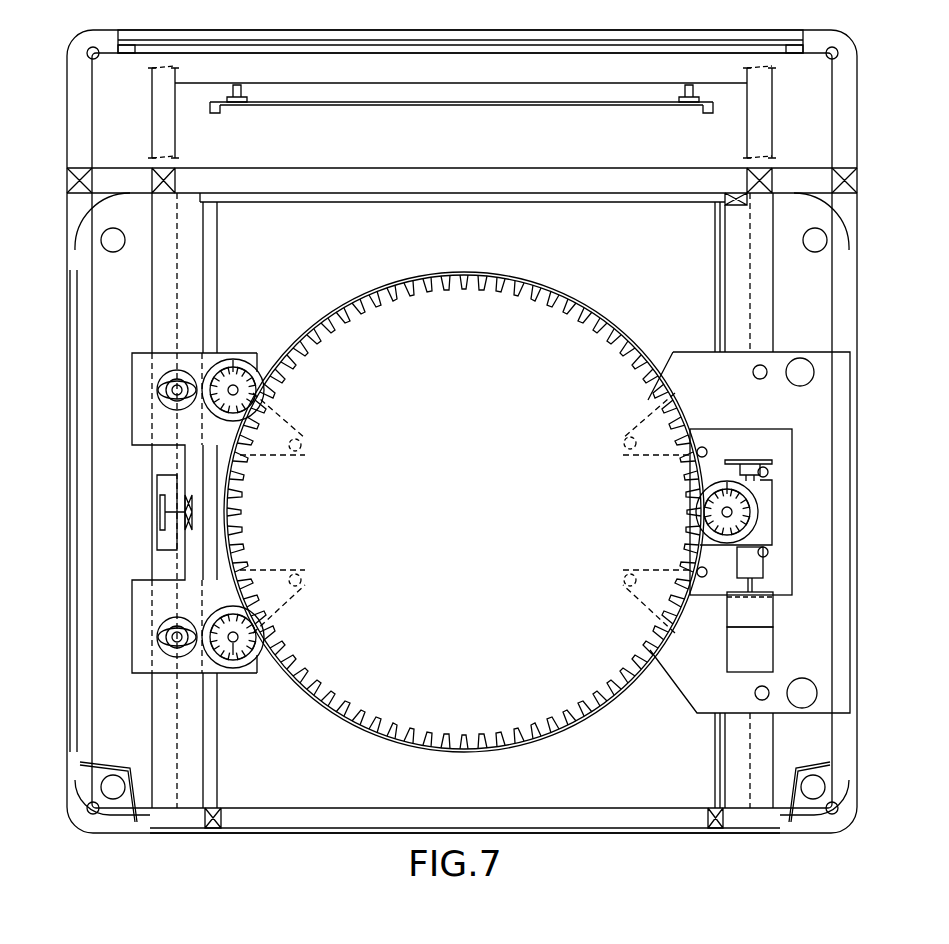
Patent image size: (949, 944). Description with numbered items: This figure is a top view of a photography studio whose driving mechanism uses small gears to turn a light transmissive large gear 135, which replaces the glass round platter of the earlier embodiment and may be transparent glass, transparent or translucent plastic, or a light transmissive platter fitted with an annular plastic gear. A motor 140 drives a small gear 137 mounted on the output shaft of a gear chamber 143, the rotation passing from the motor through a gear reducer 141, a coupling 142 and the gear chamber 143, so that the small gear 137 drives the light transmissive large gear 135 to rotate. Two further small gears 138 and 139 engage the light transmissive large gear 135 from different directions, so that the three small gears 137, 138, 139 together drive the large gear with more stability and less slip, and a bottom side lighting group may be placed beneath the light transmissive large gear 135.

The light transmissive large gear 135 is at (570, 337).
The small gear 137 is at (740, 503).
The small gear 138 is at (242, 360).
The small gear 139 is at (237, 664).
The motor 140 is at (750, 655).
The gear reducer 141 is at (750, 610).
The coupling 142 is at (750, 563).
The gear chamber 143 is at (768, 523).